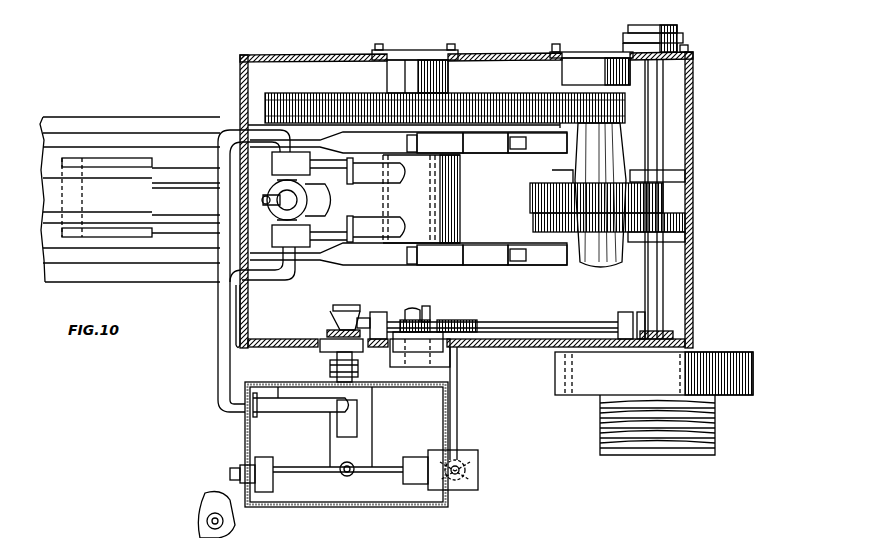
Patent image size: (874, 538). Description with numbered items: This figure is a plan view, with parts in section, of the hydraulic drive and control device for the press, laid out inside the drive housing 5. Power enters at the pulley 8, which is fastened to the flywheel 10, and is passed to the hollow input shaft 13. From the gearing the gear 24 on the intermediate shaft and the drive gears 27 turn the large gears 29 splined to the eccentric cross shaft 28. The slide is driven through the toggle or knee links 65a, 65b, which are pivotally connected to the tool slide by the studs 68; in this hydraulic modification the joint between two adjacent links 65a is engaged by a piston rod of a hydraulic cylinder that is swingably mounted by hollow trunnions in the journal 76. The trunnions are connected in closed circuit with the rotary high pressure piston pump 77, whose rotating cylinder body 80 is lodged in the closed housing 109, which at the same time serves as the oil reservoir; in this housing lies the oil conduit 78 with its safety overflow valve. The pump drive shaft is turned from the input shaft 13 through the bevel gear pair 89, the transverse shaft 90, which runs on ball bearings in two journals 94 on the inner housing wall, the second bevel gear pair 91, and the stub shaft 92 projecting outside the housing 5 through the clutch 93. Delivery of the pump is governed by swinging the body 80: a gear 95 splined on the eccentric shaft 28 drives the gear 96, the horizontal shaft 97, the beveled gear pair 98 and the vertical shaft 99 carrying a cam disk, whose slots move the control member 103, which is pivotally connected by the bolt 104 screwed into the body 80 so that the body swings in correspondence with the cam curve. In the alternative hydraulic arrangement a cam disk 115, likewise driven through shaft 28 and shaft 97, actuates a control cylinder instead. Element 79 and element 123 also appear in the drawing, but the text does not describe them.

The drive housing 5 is at (690, 263).
The pulley 8 is at (715, 430).
The flywheel 10 is at (740, 373).
The hollow shaft 13 is at (660, 292).
The gear 24 is at (660, 200).
The drive gears 27 is at (614, 118).
The cross shaft 28 is at (426, 306).
The gears 29 is at (488, 95).
The knee links 65a is at (460, 188).
The knee link 65b is at (185, 180).
The studs 68 is at (74, 177).
The journal 76 is at (299, 170).
The rotary high pressure piston pump 77 is at (357, 430).
The oil conduit 78 is at (230, 135).
The pipe 79 is at (222, 305).
The cylinder body 80 is at (362, 450).
The bevel gear pair 89 is at (650, 335).
The transverse shaft 90 is at (545, 322).
The bevel gear pair 91 is at (334, 328).
The stub shaft 92 is at (335, 352).
The clutch 93 is at (358, 368).
The journals 94 is at (377, 312).
The gear 95 is at (432, 320).
The gear 96 is at (462, 320).
The horizontal shaft 97 is at (458, 382).
The beveled gear pair 98 is at (463, 455).
The vertical shaft 99 is at (458, 486).
The control member 103 is at (298, 467).
The bolt 104 is at (352, 476).
The closed housing 109 is at (335, 507).
The cam disk 115 is at (205, 503).
The lever 123 is at (129, 531).